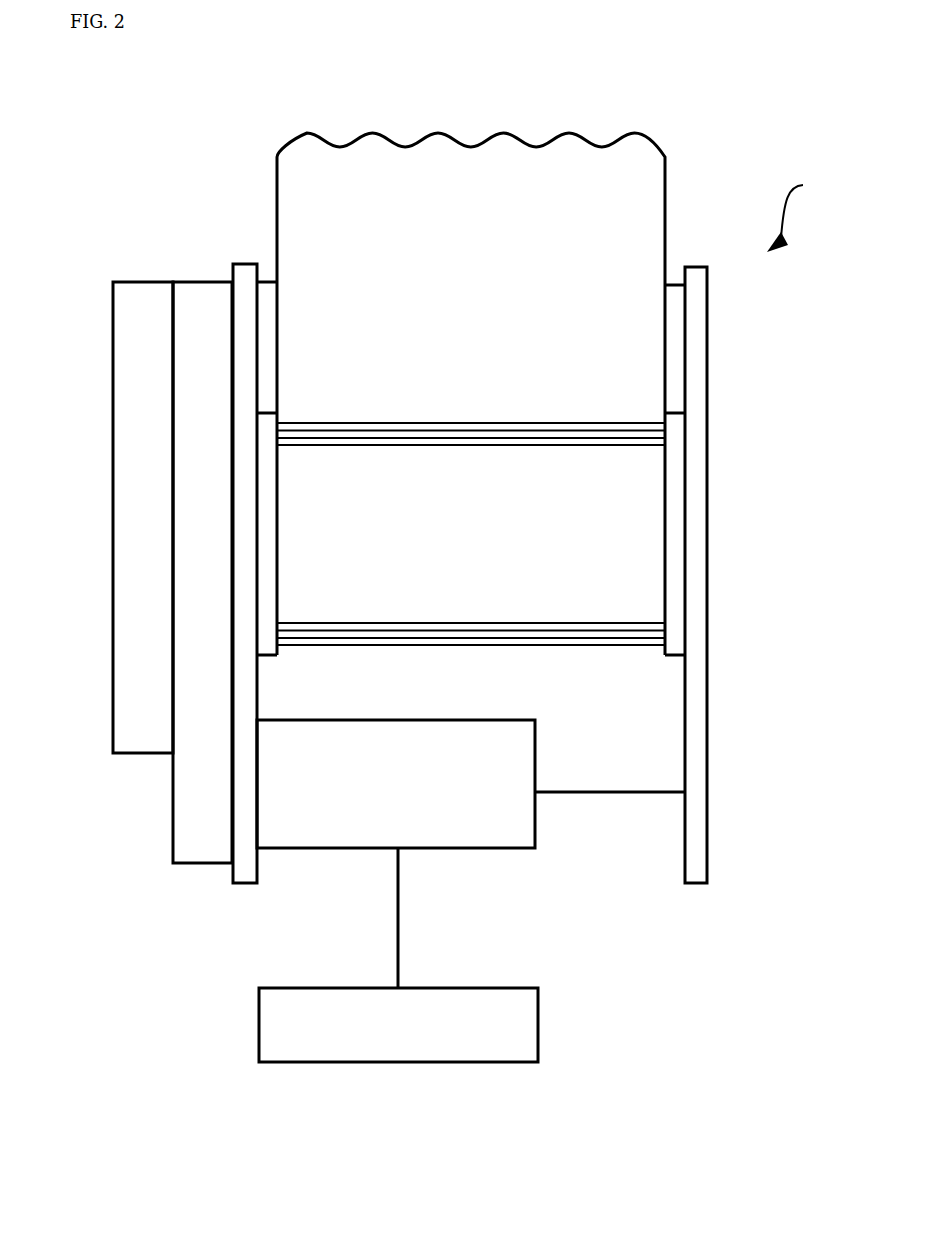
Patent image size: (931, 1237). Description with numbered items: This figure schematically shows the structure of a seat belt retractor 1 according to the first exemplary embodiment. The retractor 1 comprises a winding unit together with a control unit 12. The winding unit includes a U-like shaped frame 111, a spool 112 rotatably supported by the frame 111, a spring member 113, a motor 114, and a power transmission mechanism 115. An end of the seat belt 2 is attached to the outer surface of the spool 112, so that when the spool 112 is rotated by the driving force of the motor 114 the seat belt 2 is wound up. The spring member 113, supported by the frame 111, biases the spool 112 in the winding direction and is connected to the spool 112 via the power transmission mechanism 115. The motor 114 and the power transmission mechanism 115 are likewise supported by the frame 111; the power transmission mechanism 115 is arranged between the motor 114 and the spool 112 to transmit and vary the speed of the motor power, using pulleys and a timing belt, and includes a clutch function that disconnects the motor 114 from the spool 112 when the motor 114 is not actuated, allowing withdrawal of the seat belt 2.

The seat belt retractor 1 is at (157, 144).
The seat belt 2 is at (498, 151).
The frame 111 is at (680, 284).
The spool 112 is at (622, 542).
The spring member 113 is at (138, 746).
The motor 114 is at (348, 847).
The power transmission mechanism 115 is at (198, 858).
The control unit 12 is at (527, 1032).